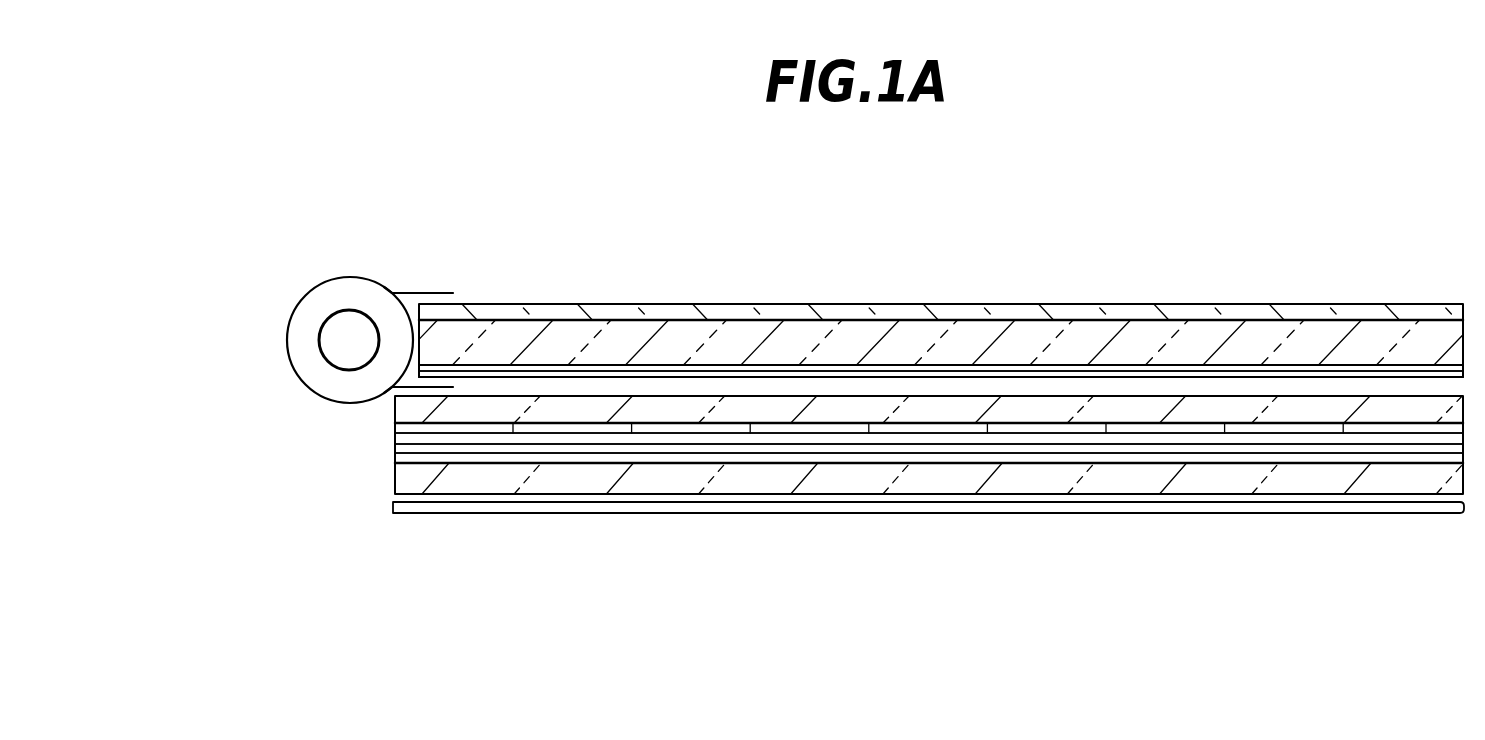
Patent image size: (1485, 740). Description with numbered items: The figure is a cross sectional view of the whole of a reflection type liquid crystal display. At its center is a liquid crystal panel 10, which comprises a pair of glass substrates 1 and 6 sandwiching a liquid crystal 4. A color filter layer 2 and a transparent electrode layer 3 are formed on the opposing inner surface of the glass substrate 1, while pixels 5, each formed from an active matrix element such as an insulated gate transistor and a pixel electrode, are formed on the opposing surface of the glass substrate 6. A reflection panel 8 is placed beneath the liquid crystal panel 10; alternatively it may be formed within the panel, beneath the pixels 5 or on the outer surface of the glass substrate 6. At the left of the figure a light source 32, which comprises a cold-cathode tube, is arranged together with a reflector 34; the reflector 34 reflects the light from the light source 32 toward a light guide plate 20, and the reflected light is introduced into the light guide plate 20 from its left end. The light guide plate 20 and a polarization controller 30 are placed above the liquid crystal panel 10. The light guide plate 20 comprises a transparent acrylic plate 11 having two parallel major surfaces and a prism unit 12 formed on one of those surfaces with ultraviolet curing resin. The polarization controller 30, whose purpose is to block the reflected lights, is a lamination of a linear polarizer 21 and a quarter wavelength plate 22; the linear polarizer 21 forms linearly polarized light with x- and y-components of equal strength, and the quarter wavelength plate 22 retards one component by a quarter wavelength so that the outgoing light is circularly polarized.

The glass substrate 1 is at (400, 413).
The color filter layer 2 is at (400, 428).
The transparent electrode layer 3 is at (400, 441).
The liquid crystal 4 is at (400, 450).
The pixels 5 is at (400, 460).
The glass substrate 6 is at (408, 477).
The reflection panel 8 is at (420, 510).
The liquid crystal panel 10 is at (212, 425).
The acrylic plate 11 is at (960, 342).
The prism unit 12 is at (862, 307).
The light guide plate 20 is at (1002, 222).
The linear polarizer 21 is at (1122, 367).
The quarter wavelength plate 22 is at (1193, 377).
The polarization controller 30 is at (1243, 234).
The light source 32 is at (335, 337).
The reflector 34 is at (298, 307).